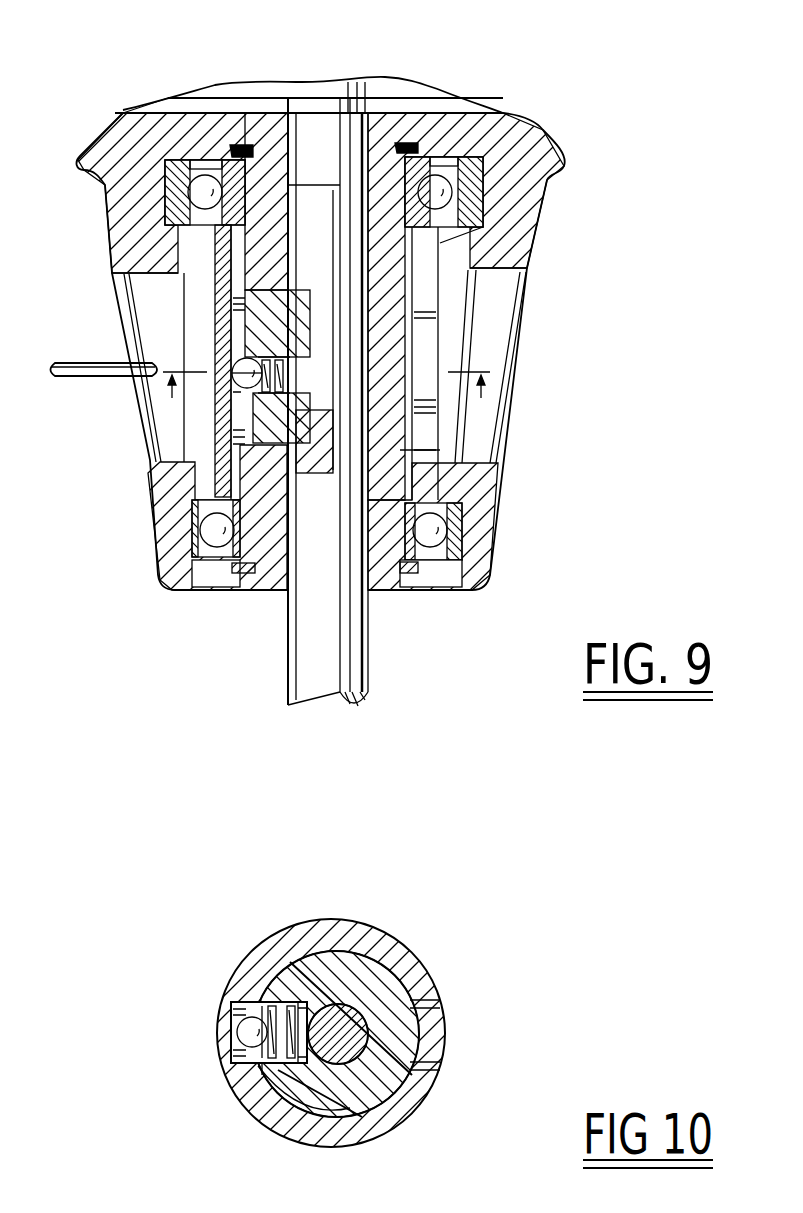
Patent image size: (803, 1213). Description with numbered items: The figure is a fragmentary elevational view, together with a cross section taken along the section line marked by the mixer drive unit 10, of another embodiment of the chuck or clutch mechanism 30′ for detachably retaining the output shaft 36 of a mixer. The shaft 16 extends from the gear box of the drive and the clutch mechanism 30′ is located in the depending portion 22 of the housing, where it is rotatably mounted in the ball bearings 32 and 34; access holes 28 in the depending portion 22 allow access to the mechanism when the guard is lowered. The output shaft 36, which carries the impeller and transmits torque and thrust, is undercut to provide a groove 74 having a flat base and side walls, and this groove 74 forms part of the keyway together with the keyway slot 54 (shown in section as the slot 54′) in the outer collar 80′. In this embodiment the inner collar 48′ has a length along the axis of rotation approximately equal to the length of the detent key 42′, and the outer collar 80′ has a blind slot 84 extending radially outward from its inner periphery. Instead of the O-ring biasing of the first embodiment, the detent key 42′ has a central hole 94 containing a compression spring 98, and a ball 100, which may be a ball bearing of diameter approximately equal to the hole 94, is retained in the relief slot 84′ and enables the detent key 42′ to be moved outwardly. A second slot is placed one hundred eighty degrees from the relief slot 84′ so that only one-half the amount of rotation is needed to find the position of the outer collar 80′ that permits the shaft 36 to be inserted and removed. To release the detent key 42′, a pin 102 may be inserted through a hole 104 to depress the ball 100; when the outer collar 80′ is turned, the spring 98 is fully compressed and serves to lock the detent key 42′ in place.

In FIG. 9, the mixer drive unit 10 is at (325, 368).
In FIG. 9, the shaft 16 is at (330, 120).
In FIG. 9, the depending portion 22 is at (165, 542).
In FIG. 9, the access holes 28 is at (130, 272).
In FIG. 9, the clutch mechanism 30′ is at (195, 336).
In FIG. 9, the ball bearing 32 is at (540, 135).
In FIG. 9, the ball bearing 34 is at (432, 541).
In FIG. 9, the output shaft 36 is at (336, 626).
In FIG. 10, the output shaft 36 is at (334, 1012).
In FIG. 9, the detent key 42′ is at (262, 412).
In FIG. 10, the detent key 42′ is at (258, 1082).
In FIG. 9, the inner collar 48′ is at (403, 450).
In FIG. 9, the keyway slot 54 is at (250, 292).
In FIG. 10, the keyway slot 54′ is at (298, 1002).
In FIG. 9, the groove 74 is at (326, 448).
In FIG. 10, the groove 74 is at (317, 960).
In FIG. 9, the outer collar 80′ is at (430, 248).
In FIG. 10, the outer collar 80′ is at (392, 952).
In FIG. 10, the blind slot 84 is at (231, 1005).
In FIG. 9, the relief slot 84′ is at (228, 325).
In FIG. 9, the central hole 94 is at (278, 350).
In FIG. 10, the central hole 94 is at (258, 1002).
In FIG. 9, the compression spring 98 is at (318, 300).
In FIG. 10, the compression spring 98 is at (303, 1066).
In FIG. 9, the ball 100 is at (226, 301).
In FIG. 10, the ball 100 is at (233, 1018).
In FIG. 9, the pin 102 is at (55, 384).
In FIG. 9, the hole 104 is at (240, 376).
In FIG. 10, the hole 104 is at (233, 1047).